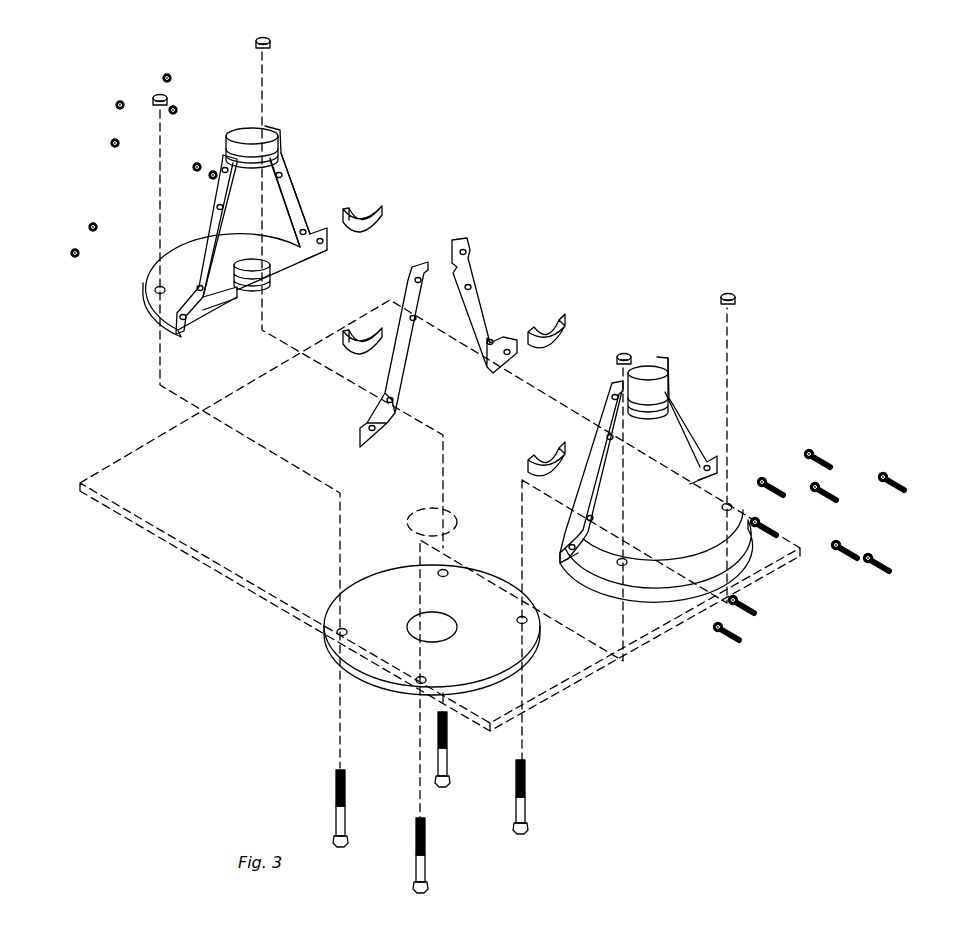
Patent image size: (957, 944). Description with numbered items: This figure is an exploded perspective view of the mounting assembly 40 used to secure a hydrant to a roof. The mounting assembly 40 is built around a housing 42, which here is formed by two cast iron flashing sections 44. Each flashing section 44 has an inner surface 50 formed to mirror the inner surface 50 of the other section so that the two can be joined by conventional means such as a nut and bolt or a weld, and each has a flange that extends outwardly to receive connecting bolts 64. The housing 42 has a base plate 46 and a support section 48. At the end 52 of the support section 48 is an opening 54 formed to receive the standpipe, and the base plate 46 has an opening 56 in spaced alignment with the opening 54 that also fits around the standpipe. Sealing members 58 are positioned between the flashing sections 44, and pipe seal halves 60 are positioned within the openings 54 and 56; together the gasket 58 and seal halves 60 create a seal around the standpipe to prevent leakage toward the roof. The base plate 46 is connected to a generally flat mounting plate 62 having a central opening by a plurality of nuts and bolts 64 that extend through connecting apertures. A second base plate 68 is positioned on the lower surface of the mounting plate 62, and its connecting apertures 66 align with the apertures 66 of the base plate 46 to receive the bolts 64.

The mounting assembly 40 is at (555, 239).
The housing 42 is at (277, 206).
The flashing sections 44 is at (197, 217).
The base plate 46 is at (160, 307).
The support section 48 is at (196, 250).
The inner surface 50 is at (202, 302).
The end 52 is at (262, 127).
The opening 54 is at (270, 152).
The opening 56 is at (258, 282).
The sealing members 58 is at (392, 395).
The pipe seal halves 60 is at (368, 208).
The mounting plate 62 is at (410, 517).
The bolts 64 is at (337, 804).
The connecting apertures 66 is at (441, 571).
The second base plate 68 is at (360, 598).